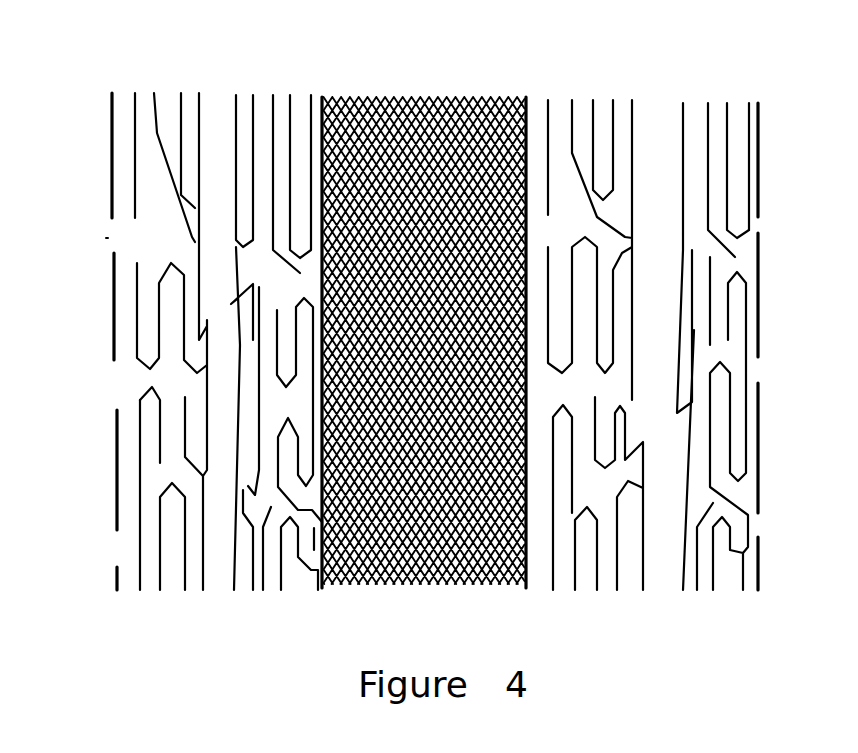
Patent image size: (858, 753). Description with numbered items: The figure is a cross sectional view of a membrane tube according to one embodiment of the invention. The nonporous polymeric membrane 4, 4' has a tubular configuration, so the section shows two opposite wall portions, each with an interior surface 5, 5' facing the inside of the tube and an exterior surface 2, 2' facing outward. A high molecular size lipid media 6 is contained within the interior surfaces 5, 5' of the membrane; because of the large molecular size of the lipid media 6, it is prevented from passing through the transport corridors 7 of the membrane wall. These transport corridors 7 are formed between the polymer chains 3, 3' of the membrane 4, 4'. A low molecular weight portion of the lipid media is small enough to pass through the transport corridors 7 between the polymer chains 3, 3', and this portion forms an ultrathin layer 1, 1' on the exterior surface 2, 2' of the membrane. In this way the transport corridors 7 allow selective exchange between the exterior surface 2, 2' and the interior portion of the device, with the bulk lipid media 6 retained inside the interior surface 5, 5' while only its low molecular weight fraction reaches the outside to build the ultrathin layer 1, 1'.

The ultrathin layer 1 is at (176, 337).
The exterior surface 2 is at (106, 307).
The polymer chains 3 is at (133, 307).
The nonporous polymeric membrane 4 is at (232, 141).
The interior surface 5 is at (318, 306).
The high molecular size lipid media 6 is at (425, 97).
The transport corridors 7 is at (105, 238).
The ultrathin layer 1' is at (765, 336).
The exterior surface 2' is at (769, 304).
The polymer chains 3' is at (736, 124).
The nonporous polymeric membrane 4' is at (624, 304).
The interior surface 5' is at (520, 306).